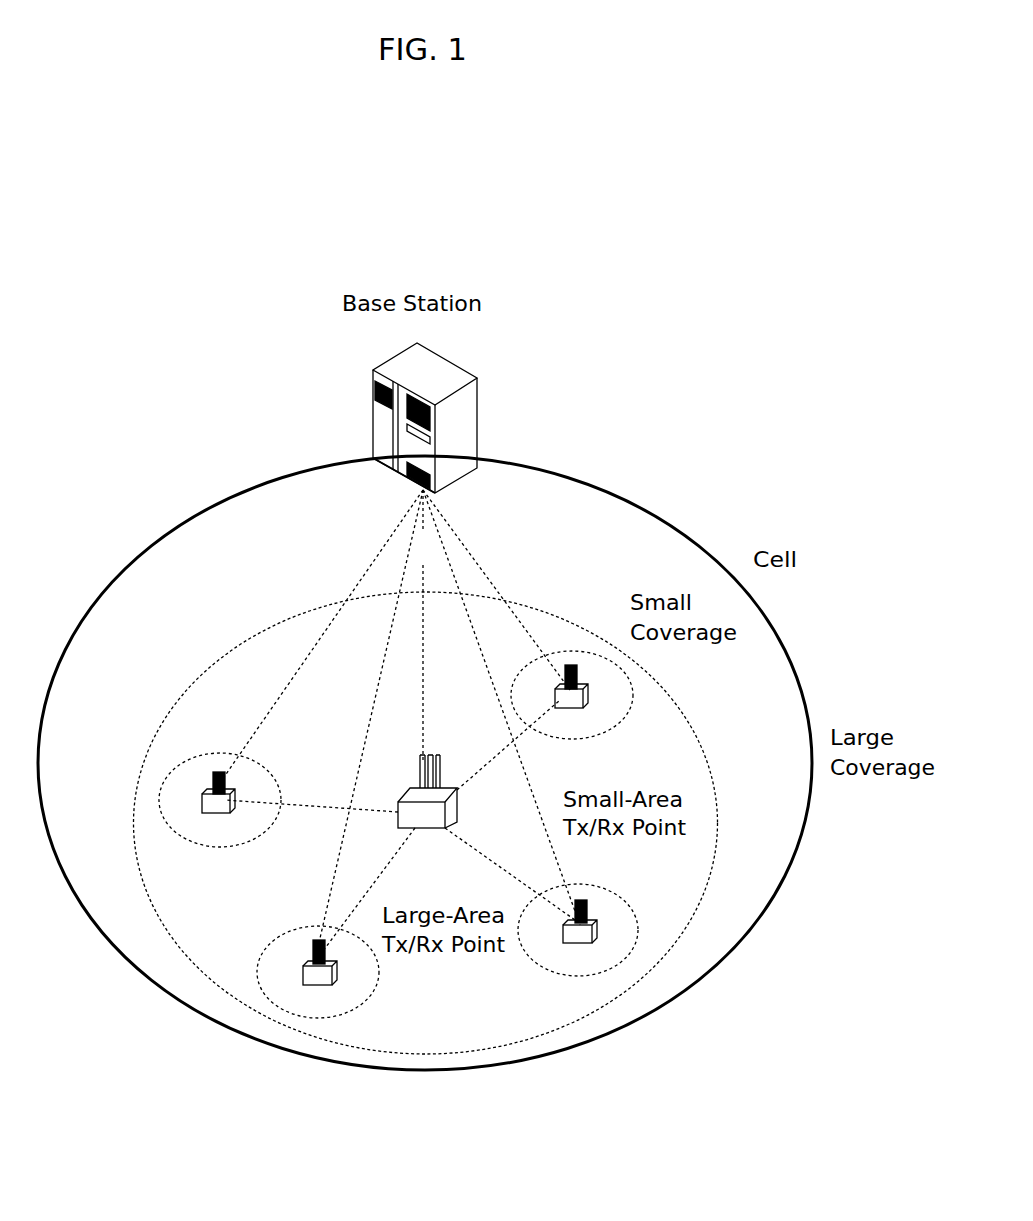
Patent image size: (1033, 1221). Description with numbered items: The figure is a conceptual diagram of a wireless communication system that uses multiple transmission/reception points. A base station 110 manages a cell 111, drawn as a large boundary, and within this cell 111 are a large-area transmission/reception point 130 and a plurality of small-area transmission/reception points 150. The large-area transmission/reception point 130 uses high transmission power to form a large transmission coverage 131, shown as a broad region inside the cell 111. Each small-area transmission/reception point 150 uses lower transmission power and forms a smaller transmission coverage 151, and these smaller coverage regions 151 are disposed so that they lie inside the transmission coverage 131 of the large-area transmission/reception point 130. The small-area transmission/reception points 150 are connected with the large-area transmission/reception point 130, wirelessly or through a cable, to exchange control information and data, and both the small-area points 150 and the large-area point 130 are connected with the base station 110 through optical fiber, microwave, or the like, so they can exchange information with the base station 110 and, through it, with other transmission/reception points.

The base station 110 is at (477, 410).
The cell 111 is at (703, 548).
The large-area transmission/reception point 130 is at (430, 830).
The transmission coverage 131 is at (705, 752).
The small-area transmission/reception point 150 is at (580, 708).
The transmission coverage 151 is at (628, 680).